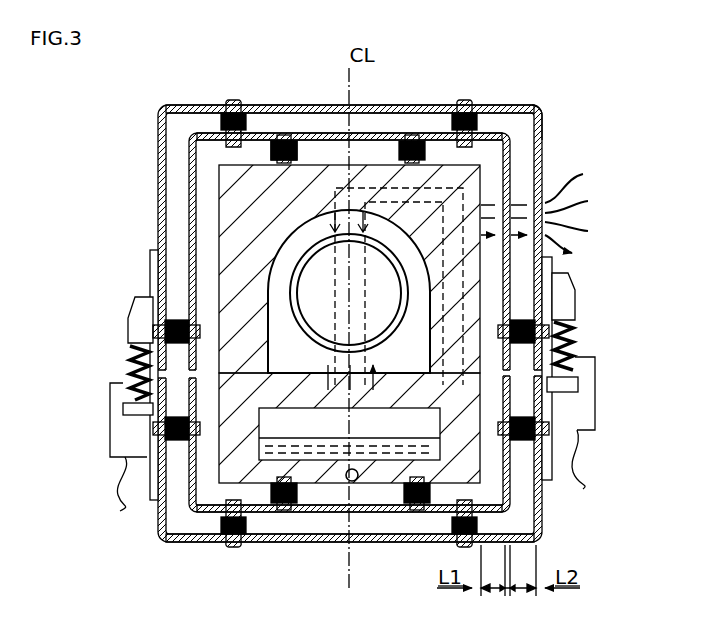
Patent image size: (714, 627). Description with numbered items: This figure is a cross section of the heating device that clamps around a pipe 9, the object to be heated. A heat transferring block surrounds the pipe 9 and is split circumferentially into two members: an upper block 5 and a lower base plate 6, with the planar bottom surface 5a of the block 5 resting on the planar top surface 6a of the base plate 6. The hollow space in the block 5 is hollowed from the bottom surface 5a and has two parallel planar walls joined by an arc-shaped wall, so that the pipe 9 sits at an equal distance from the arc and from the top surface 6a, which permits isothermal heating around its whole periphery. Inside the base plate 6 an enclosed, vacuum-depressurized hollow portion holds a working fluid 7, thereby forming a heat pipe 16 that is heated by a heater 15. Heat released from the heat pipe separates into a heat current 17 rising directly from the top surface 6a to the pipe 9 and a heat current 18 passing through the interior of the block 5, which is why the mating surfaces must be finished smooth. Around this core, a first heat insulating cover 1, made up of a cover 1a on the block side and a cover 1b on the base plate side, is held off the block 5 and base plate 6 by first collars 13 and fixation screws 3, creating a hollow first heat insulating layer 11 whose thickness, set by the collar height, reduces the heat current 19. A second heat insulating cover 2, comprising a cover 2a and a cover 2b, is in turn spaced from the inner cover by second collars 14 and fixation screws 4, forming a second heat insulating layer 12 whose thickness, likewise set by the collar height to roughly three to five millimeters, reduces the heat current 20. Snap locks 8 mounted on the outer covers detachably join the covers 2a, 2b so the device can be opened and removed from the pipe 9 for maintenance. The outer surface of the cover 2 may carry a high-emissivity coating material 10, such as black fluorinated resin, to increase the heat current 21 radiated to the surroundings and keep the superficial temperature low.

The first heat insulating cover 1 is at (310, 133).
The first heat insulating cover on the side of block 1a is at (349, 100).
The first heat insulating cover on the side of base plate 1b is at (349, 558).
The second heat insulating cover 2 is at (395, 105).
The second heat insulating cover on the side of block 2a is at (350, 86).
The second heat insulating cover on the side of base plate 2b is at (350, 572).
The fixation screw 3 is at (283, 135).
The fixation screw 4 is at (464, 100).
The block 5 is at (238, 181).
The bottom surface of block 5a is at (157, 330).
The base plate 6 is at (240, 470).
The top surface of base plate 6a is at (157, 412).
The working fluid 7 is at (283, 490).
The snap lock 8 is at (125, 443).
The pipe 9 is at (295, 290).
The coating material 10 is at (509, 105).
The first heat insulating layer 11 is at (207, 210).
The second heat insulating layer 12 is at (180, 238).
The first collar 13 is at (272, 153).
The second collar 14 is at (222, 130).
The heater 15 is at (352, 482).
The heat pipe 16 is at (275, 423).
The heat current 17 is at (350, 375).
The heat current 18 is at (466, 270).
The heat current 19 is at (486, 203).
The heat current 20 is at (515, 203).
The heat current 21 is at (580, 198).